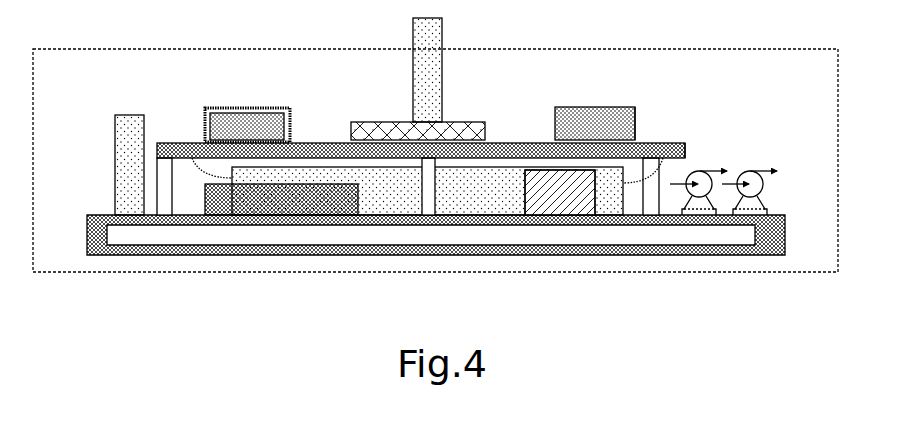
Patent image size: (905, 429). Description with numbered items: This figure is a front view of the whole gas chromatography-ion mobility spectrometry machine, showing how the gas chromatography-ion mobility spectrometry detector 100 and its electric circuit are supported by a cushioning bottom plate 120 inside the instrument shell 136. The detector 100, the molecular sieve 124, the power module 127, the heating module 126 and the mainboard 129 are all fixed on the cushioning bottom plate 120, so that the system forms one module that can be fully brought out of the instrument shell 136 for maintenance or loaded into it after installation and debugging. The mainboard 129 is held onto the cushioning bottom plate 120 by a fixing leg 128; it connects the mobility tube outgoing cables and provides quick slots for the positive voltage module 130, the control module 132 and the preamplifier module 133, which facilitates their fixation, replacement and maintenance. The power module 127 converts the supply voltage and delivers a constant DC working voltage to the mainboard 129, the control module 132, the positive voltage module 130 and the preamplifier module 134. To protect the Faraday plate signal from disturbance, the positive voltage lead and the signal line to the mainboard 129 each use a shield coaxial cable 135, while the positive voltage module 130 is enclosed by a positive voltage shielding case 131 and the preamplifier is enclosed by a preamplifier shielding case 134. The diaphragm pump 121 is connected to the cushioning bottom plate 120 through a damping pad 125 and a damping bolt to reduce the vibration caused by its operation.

The gas chromatography-ion mobility spectrometry detector 100 is at (427, 77).
The cushioning bottom plate 120 is at (102, 227).
The diaphragm pump 121 is at (695, 172).
The molecular sieve 124 is at (130, 132).
The damping pad 125 is at (768, 210).
The heating module 126 is at (528, 198).
The power module 127 is at (207, 200).
The fixing leg 128 is at (167, 170).
The mainboard 129 is at (200, 143).
The positive voltage module 130 is at (232, 118).
The positive voltage shielding case 131 is at (276, 112).
The control module 132 is at (455, 120).
The preamplifier module 133 is at (583, 115).
The preamplifier shielding case 134 is at (636, 107).
The shield coaxial cable 135 is at (680, 152).
The instrument shell 136 is at (743, 49).